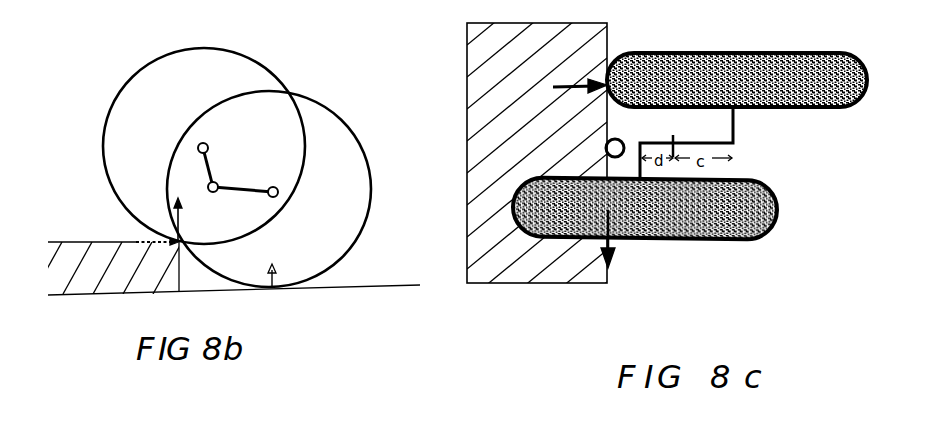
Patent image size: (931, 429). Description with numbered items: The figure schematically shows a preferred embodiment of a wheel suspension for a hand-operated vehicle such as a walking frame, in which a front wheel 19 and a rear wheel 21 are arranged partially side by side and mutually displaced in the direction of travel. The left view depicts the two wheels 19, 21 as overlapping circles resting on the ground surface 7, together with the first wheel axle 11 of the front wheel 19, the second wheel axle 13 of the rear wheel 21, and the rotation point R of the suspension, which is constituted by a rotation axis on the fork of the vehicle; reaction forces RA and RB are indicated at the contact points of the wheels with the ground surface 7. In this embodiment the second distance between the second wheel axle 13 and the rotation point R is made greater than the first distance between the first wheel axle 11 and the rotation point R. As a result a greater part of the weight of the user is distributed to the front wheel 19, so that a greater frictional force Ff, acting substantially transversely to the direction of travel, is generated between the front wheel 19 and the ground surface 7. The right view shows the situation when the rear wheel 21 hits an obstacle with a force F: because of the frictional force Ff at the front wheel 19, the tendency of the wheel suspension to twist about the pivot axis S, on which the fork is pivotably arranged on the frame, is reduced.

In FIG. 8B, the front wheel 19 is at (258, 53).
In FIG. 8C, the front wheel 19 is at (717, 237).
In FIG. 8B, the rear wheel 21 is at (358, 137).
In FIG. 8C, the rear wheel 21 is at (785, 52).
In FIG. 8B, the first wheel axle 11 is at (198, 143).
In FIG. 8B, the second wheel axle 13 is at (279, 192).
In FIG. 8C, the ground surface 7 is at (609, 270).
In FIG. 8B, the rotation point R is at (217, 183).
In FIG. 8C, the rotation point R is at (694, 142).
In FIG. 8B, the reaction force A RA is at (178, 218).
In FIG. 8B, the reaction force B RB is at (281, 272).
In FIG. 8C, the force F is at (567, 92).
In FIG. 8C, the frictional force Ff is at (612, 240).
In FIG. 8C, the pivot axis S is at (614, 125).